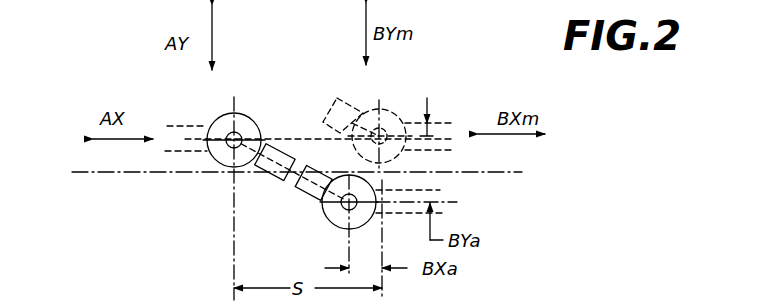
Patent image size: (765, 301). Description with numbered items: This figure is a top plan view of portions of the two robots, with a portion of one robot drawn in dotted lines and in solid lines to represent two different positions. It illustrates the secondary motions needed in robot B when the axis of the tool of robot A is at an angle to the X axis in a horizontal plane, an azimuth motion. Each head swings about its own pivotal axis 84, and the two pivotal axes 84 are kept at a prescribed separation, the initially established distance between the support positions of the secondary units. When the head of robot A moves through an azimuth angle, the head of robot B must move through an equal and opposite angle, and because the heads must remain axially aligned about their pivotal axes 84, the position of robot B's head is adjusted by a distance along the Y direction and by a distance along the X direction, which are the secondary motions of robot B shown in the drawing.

The pivotal axis 84 is at (233, 133).